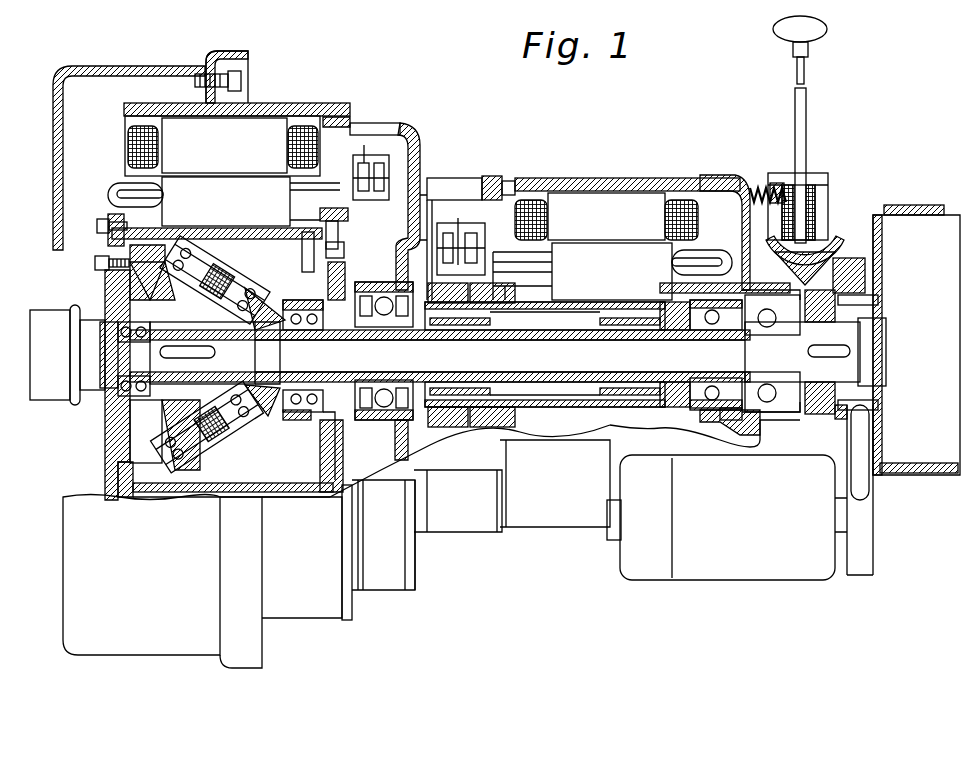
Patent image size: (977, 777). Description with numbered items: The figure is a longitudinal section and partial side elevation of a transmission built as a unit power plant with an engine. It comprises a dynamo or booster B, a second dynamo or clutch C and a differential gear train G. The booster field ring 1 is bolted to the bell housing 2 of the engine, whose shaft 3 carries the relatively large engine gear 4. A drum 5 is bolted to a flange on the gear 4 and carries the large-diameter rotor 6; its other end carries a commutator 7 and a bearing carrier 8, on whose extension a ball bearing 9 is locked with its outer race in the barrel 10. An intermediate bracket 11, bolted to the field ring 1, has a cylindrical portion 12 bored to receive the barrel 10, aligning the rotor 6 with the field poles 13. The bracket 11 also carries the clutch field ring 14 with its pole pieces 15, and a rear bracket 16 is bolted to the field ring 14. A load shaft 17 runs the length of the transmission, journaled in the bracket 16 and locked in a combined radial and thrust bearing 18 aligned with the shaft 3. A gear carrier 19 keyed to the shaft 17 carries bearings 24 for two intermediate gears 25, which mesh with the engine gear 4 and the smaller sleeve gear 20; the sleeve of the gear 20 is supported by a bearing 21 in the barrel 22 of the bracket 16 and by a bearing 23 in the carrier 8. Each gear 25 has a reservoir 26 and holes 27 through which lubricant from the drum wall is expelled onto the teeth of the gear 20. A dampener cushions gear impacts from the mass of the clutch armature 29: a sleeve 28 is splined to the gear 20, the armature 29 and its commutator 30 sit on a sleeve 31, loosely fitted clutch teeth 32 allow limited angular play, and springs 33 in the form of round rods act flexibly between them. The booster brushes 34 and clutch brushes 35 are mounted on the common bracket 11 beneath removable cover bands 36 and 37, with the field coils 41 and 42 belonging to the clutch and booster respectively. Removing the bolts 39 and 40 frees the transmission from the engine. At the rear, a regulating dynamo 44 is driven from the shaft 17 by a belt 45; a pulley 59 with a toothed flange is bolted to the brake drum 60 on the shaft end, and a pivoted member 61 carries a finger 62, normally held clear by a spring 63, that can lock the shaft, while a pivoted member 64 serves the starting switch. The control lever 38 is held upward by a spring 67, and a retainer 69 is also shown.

The booster field ring 1 is at (295, 103).
The bell housing 2 is at (140, 66).
The shaft 3 is at (55, 328).
The engine gear 4 is at (113, 470).
The drum 5 is at (235, 492).
The rotor 6 is at (205, 201).
The commutator 7 is at (321, 213).
The bearing carrier 8 is at (345, 292).
The ball bearing 9 is at (378, 417).
The barrel 10 is at (388, 426).
The intermediate bracket 11 is at (418, 142).
The cylindrical portion 12 is at (404, 441).
The field poles 13 is at (196, 153).
The clutch field ring 14 is at (548, 180).
The pole pieces 15 is at (600, 226).
The rear bracket 16 is at (743, 219).
The load shaft 17 is at (465, 361).
The combined radial and thrust bearing 18 is at (158, 400).
The gear carrier 19 is at (202, 353).
The clutch gear 20 is at (262, 338).
The bearing 21 is at (708, 403).
The barrel 22 is at (724, 410).
The combined radial and thrust bearing 23 is at (312, 414).
The combination thrust and radial bearings 24 is at (205, 452).
The intermediate gears 25 is at (266, 418).
The reservoir 26 is at (195, 262).
The holes 27 is at (265, 308).
The sleeve 28 is at (685, 325).
The clutch armature 29 is at (600, 281).
The commutator 30 is at (505, 272).
The sleeve 31 is at (595, 394).
The clutch teeth 32 is at (672, 394).
The springs 33 is at (590, 318).
The booster brushes 34 is at (358, 176).
The clutch brushes 35 is at (475, 238).
The cover band 36 is at (390, 580).
The cover band 37 is at (480, 522).
The control lever 38 is at (806, 123).
The bolts 39 is at (243, 78).
The bolts 40 is at (88, 264).
The clutch field coil 41 is at (686, 200).
The booster field coil 42 is at (128, 149).
The regulating dynamo 44 is at (742, 566).
The belt 45 is at (846, 438).
The pulley 59 is at (835, 412).
The brake drum 60 is at (912, 212).
The pivoted member 61 is at (830, 248).
The finger 62 is at (800, 273).
The spring 63 is at (757, 186).
The pivoted member 64 is at (828, 196).
The spring 67 is at (817, 213).
The spring retainer 69 is at (776, 183).
The differential gear train G is at (166, 492).
The dynamo B is at (305, 508).
The clutch C is at (575, 440).